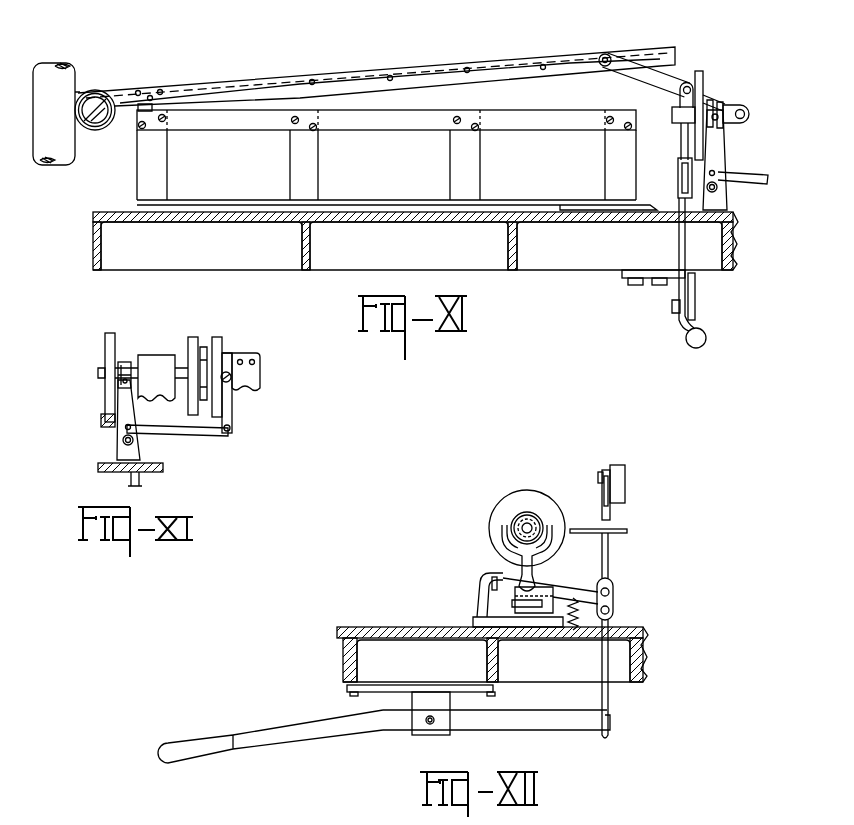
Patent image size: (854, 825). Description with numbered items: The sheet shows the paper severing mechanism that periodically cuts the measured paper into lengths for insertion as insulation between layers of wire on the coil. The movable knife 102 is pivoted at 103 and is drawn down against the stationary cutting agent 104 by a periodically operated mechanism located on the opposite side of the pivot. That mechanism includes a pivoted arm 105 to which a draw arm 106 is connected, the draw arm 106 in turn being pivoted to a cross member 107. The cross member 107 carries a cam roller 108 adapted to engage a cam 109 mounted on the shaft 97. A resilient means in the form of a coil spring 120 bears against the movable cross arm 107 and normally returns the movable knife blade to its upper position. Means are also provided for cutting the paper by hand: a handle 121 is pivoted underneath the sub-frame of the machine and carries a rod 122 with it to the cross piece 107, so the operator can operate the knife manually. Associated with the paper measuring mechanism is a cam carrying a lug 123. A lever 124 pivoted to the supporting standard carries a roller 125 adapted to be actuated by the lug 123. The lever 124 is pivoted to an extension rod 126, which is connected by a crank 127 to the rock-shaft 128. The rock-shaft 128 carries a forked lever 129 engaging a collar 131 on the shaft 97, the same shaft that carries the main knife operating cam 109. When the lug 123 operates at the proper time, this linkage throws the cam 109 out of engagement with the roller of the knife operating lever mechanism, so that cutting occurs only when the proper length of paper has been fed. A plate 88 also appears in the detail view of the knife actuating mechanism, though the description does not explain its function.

In FIG. 12, the plate 88 is at (193, 338).
In FIG. 11, the shaft 97 is at (728, 119).
In FIG. 12, the shaft 97 is at (105, 372).
In FIG. 13, the shaft 97 is at (525, 520).
In FIG. 11, the movable knife 102 is at (452, 72).
In FIG. 11, the pivot 103 is at (101, 94).
In FIG. 11, the stationary cutting agent 104 is at (507, 120).
In FIG. 11, the pivoted arm 105 is at (708, 98).
In FIG. 11, the draw arm 106 is at (685, 138).
In FIG. 13, the draw arm 106 is at (607, 563).
In FIG. 13, the cross member 107 is at (559, 584).
In FIG. 13, the cam roller 108 is at (520, 578).
In FIG. 11, the cam 109 is at (703, 73).
In FIG. 12, the cam 109 is at (112, 340).
In FIG. 13, the cam 109 is at (547, 508).
In FIG. 13, the coil spring 120 is at (604, 620).
In FIG. 13, the handle 121 is at (198, 747).
In FIG. 13, the rod 122 is at (604, 697).
In FIG. 12, the lug 123 is at (223, 353).
In FIG. 12, the lever 124 is at (226, 413).
In FIG. 12, the roller 125 is at (232, 379).
In FIG. 11, the extension rod 126 is at (742, 175).
In FIG. 12, the extension rod 126 is at (178, 429).
In FIG. 12, the crank 127 is at (125, 429).
In FIG. 11, the rock-shaft 128 is at (718, 191).
In FIG. 12, the rock-shaft 128 is at (134, 443).
In FIG. 11, the forked lever 129 is at (712, 164).
In FIG. 11, the collar 131 is at (750, 98).
In FIG. 12, the collar 131 is at (121, 379).